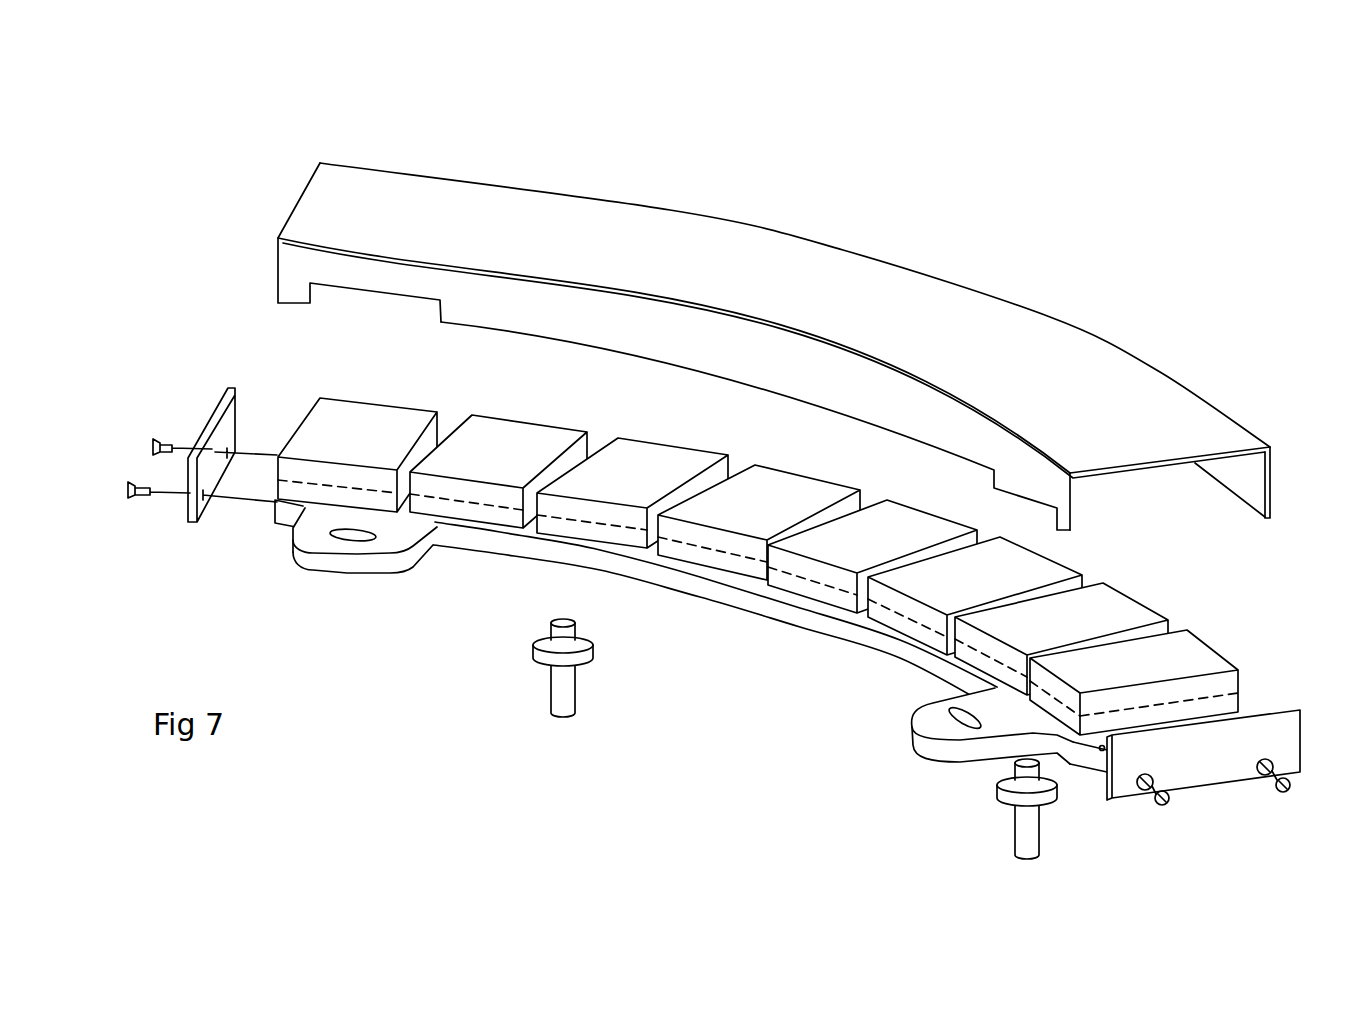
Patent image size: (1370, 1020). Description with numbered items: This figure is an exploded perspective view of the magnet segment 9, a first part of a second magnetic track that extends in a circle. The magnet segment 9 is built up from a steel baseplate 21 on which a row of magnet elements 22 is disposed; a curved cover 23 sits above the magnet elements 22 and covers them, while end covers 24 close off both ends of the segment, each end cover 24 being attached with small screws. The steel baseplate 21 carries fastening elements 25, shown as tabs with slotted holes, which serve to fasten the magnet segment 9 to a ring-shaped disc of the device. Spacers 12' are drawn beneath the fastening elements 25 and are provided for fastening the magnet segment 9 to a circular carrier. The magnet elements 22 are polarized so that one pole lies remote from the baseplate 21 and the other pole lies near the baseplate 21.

The magnet segment 9 is at (715, 153).
The cover 23 is at (1083, 370).
The steel baseplate 21 is at (868, 637).
The magnet elements 22 is at (1190, 653).
The end covers 24 is at (210, 415).
The fastening elements 25 is at (353, 565).
The spacers 12' is at (795, 749).